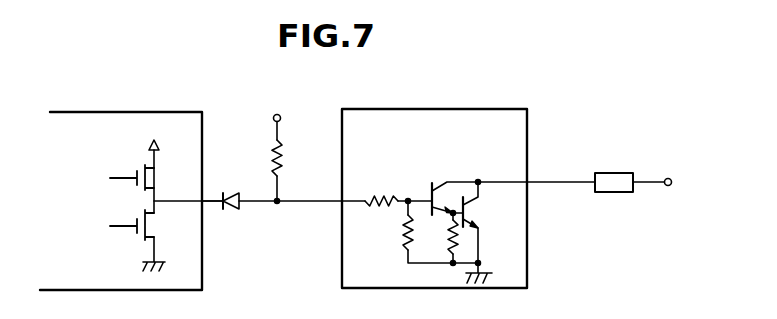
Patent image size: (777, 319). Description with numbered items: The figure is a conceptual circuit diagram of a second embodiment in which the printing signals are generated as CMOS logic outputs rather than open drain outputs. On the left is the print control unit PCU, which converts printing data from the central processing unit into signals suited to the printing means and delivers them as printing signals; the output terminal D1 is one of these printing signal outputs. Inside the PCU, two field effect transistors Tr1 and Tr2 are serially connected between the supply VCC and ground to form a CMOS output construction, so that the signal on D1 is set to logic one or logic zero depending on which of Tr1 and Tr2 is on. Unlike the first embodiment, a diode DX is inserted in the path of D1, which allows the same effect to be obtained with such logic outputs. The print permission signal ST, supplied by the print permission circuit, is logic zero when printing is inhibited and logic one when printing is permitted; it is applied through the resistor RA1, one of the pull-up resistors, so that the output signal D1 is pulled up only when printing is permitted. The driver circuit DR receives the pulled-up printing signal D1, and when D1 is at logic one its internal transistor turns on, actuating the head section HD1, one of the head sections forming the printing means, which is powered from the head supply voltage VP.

The print control unit PCU is at (131, 201).
The supply voltage terminal VCC is at (161, 141).
The field effect transistor Tr1 is at (152, 177).
The field effect transistor Tr2 is at (152, 225).
The diode DX is at (237, 189).
The output terminal D1 is at (216, 212).
The print permission signal ST is at (278, 116).
The resistor RA1 is at (300, 172).
The driver circuit DR is at (468, 198).
The head section HD1 is at (616, 170).
The head supply voltage VP is at (667, 183).